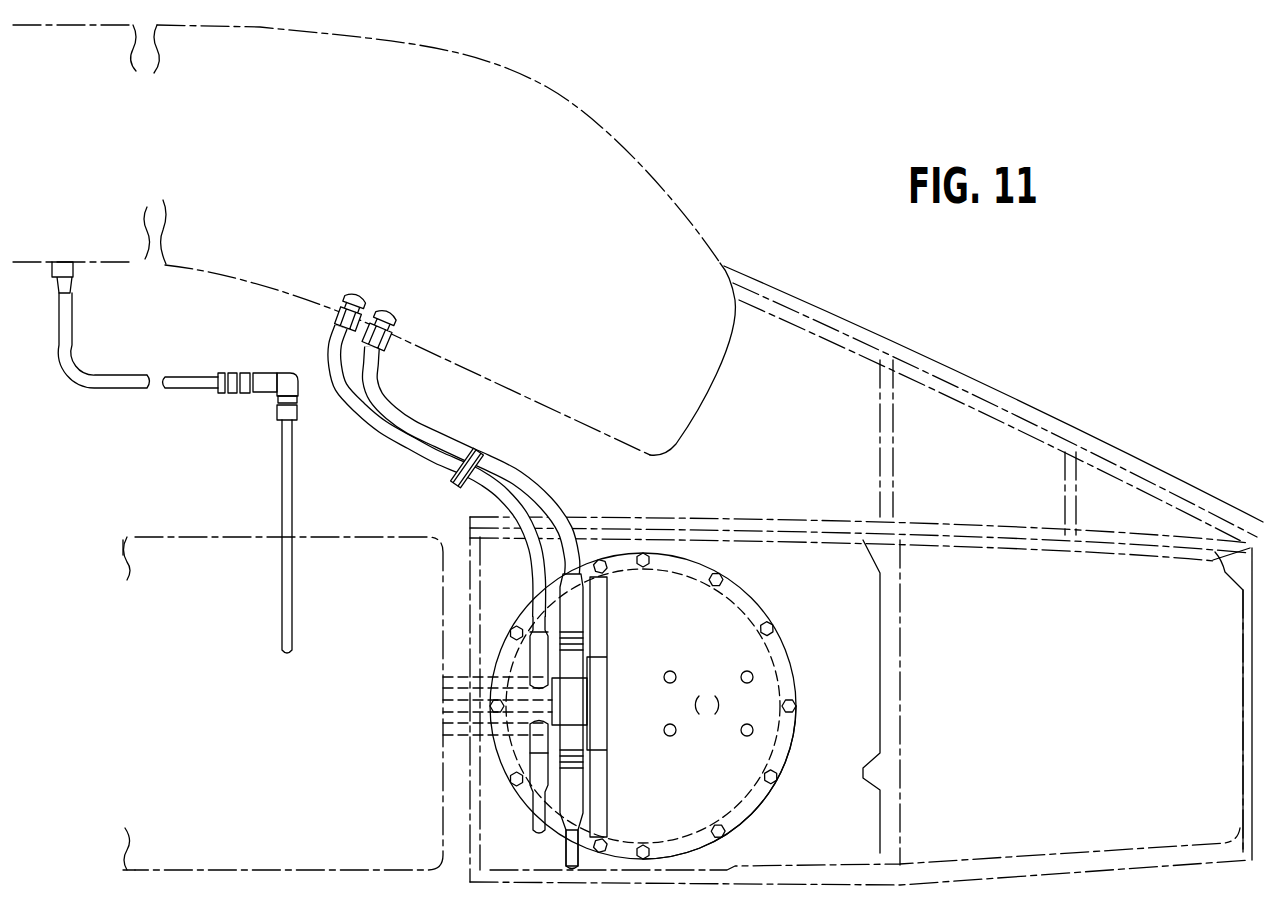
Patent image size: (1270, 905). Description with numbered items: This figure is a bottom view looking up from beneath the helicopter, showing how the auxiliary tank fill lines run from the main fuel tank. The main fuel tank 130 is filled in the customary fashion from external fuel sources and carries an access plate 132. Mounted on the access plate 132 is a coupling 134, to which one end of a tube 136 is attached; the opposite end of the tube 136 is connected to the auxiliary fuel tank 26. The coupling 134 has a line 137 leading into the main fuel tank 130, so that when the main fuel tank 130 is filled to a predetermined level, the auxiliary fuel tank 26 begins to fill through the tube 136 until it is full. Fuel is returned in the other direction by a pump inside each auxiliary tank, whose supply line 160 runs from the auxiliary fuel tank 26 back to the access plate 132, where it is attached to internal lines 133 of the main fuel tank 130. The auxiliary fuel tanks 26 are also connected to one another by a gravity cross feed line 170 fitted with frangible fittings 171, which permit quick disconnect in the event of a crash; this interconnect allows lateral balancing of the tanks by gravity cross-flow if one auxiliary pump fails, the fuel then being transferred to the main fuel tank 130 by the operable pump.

The auxiliary fuel tank 26 is at (656, 185).
The main fuel tank 130 is at (306, 706).
The access plate 132 is at (760, 697).
The internal lines 133 is at (450, 730).
The coupling 134 is at (579, 693).
The tube 136 is at (534, 483).
The line 137 is at (452, 700).
The supply line 160 is at (410, 450).
The gravity cross feed line 170 is at (288, 471).
The frangible fittings 171 is at (277, 377).